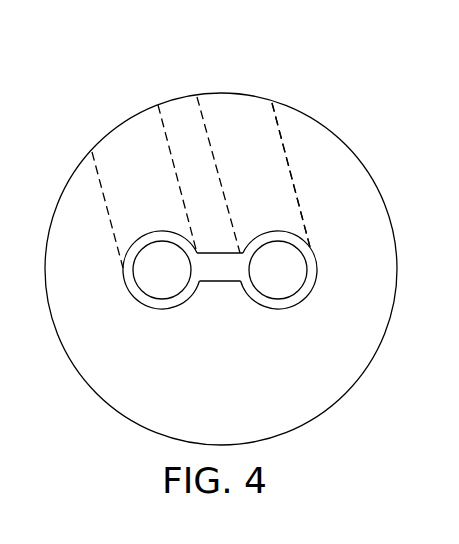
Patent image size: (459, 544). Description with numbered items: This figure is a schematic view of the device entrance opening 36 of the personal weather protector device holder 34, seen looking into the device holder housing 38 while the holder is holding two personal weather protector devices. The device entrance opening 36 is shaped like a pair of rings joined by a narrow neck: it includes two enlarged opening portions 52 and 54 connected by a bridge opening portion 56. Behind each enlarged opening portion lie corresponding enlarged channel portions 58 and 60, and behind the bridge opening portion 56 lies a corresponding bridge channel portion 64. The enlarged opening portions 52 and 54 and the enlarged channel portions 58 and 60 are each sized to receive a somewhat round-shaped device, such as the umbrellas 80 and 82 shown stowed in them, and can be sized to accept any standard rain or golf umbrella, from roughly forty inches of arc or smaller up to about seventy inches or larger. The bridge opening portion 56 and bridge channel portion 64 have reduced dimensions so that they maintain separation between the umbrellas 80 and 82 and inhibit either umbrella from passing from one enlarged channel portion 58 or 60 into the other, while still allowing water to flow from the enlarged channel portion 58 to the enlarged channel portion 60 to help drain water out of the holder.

The personal weather protector device holder 34 is at (221, 255).
The device entrance opening 36 is at (211, 145).
The device holder housing 38 is at (312, 148).
The enlarged opening portion 52 is at (161, 318).
The enlarged opening portion 54 is at (279, 316).
The bridge opening portion 56 is at (220, 315).
The enlarged channel portion 58 is at (80, 197).
The enlarged channel portion 60 is at (312, 175).
The bridge channel portion 64 is at (163, 145).
The umbrella 80 is at (141, 277).
The umbrella 82 is at (298, 277).